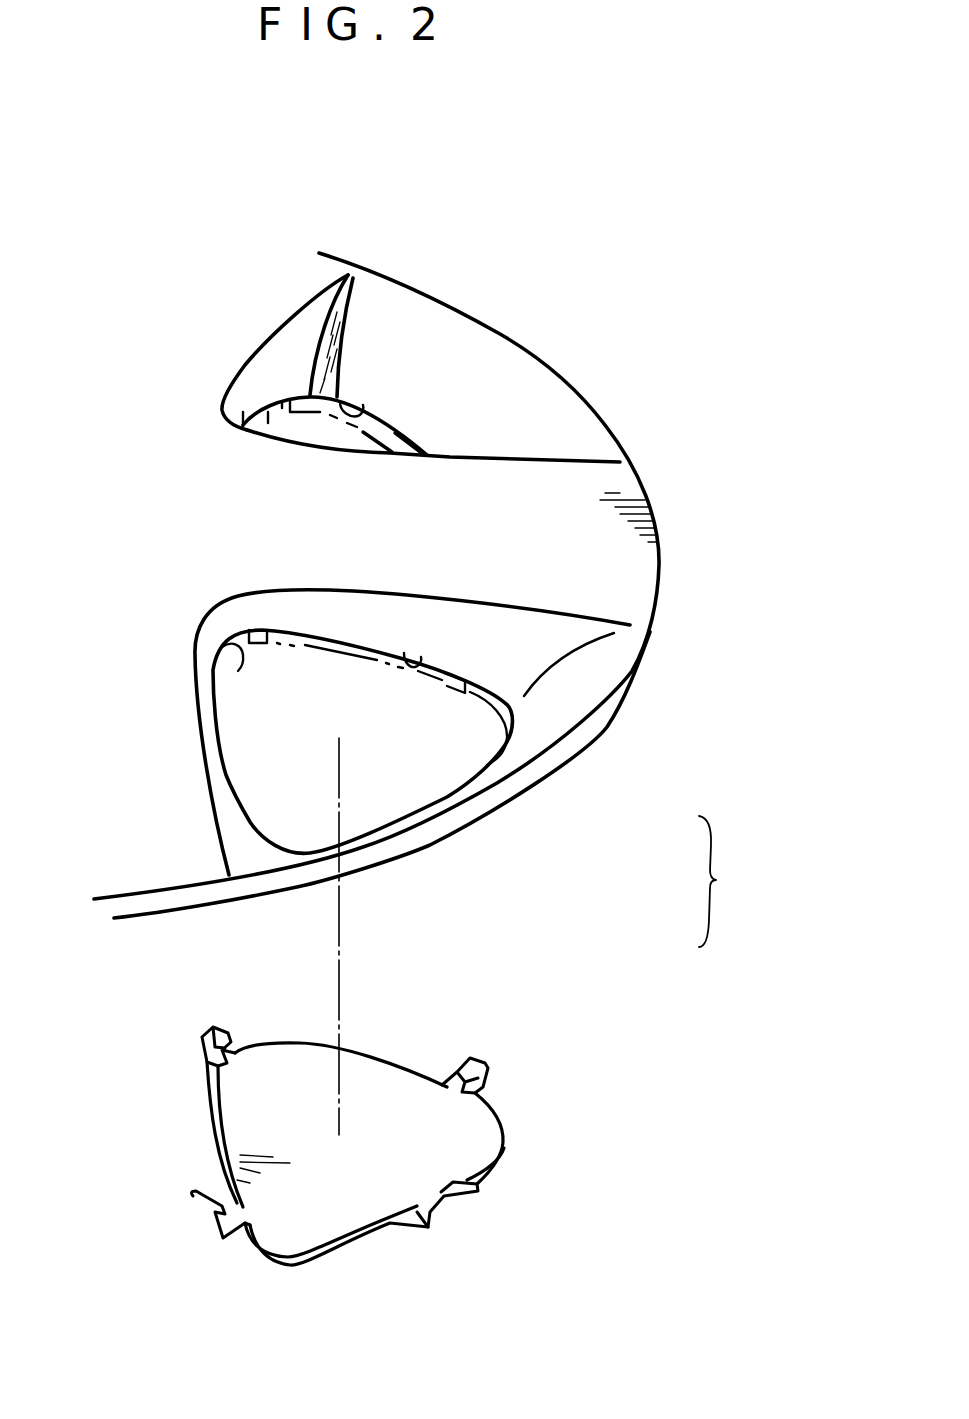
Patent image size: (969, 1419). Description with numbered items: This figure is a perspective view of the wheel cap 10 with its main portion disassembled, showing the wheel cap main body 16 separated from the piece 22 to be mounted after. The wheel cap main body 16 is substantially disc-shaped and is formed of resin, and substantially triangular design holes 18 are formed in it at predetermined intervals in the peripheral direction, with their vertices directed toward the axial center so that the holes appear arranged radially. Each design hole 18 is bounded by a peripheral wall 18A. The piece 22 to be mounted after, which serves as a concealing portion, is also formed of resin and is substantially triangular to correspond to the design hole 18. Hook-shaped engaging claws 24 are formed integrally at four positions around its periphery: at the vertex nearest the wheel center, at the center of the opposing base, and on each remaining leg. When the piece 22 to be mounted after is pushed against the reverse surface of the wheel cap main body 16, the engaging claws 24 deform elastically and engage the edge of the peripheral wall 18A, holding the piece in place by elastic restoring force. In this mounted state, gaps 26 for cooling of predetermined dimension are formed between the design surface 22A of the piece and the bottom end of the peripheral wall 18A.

The wheel cap 10 is at (734, 881).
The wheel cap main body 16 is at (609, 784).
The design hole 18 is at (309, 707).
The peripheral wall 18A is at (431, 718).
The piece to be mounted after 22 is at (398, 433).
The design surface 22A is at (277, 795).
The engaging claw 24 is at (282, 407).
The gap for cooling 26 is at (342, 405).